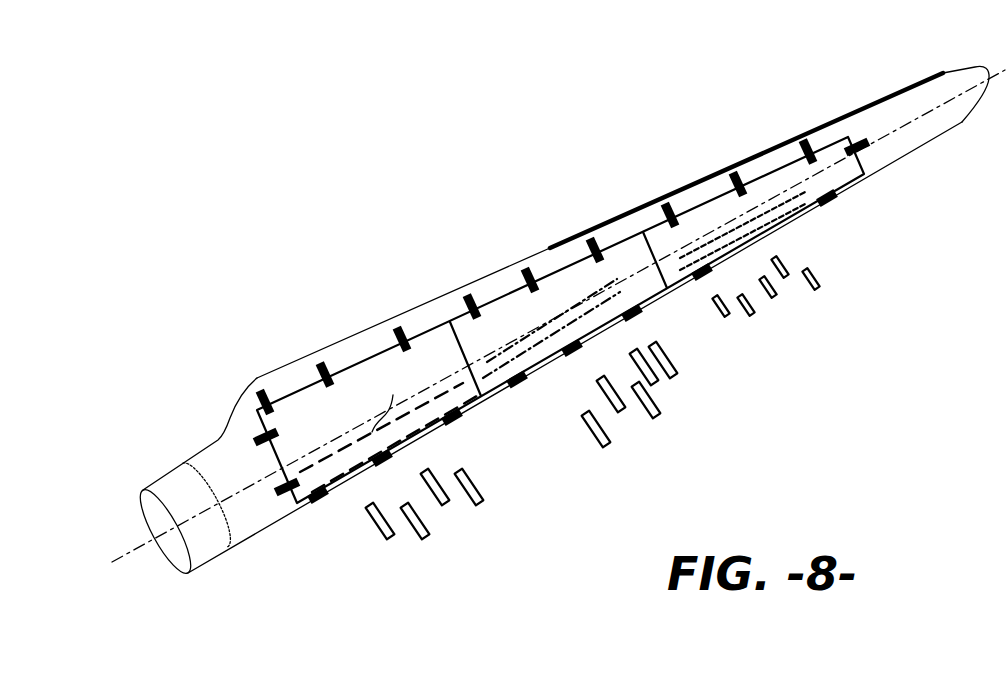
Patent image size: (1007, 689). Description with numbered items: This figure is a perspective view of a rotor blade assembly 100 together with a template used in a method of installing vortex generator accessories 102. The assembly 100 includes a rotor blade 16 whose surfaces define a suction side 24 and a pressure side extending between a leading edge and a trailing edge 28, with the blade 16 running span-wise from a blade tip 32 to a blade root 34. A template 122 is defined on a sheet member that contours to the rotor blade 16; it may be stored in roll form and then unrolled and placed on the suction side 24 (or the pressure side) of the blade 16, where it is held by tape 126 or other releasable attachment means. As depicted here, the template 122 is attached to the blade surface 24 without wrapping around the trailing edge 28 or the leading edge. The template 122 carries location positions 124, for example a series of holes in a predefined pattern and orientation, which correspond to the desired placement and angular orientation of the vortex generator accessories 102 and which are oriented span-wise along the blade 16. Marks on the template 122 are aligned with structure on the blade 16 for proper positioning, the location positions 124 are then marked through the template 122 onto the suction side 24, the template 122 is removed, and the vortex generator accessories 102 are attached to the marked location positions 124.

The rotor blade 16 is at (575, 347).
The suction side 24 is at (345, 365).
The trailing edge 28 is at (257, 377).
The blade tip 32 is at (948, 75).
The blade root 34 is at (558, 344).
The rotor blade assembly 100 is at (642, 160).
The vortex generator accessories 102 is at (593, 445).
The template 122 is at (565, 323).
The location positions 124 is at (773, 223).
The tape 126 is at (668, 207).